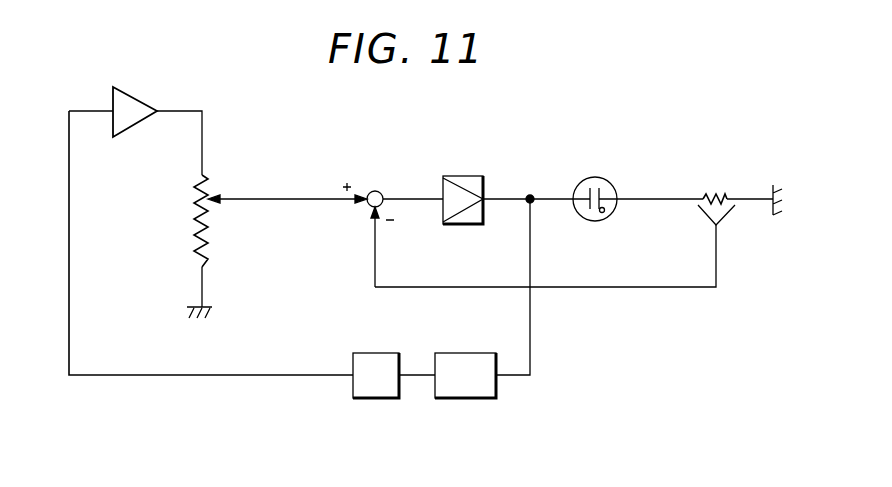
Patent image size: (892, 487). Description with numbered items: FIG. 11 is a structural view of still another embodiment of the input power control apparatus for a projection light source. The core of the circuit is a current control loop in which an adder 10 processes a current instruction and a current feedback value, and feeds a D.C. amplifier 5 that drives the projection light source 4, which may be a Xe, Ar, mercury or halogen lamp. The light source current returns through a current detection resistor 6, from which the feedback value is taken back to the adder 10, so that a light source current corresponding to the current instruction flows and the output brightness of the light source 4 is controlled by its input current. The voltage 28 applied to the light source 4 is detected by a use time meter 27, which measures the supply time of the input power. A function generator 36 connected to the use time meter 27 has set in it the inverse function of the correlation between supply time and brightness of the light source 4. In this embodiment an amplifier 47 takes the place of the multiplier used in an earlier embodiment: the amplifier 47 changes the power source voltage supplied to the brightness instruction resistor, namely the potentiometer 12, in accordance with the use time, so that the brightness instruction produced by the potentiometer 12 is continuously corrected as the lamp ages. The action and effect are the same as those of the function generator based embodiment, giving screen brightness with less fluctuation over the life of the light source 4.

The amplifier 47 is at (133, 93).
The potentiometer 12 is at (190, 211).
The adder 10 is at (377, 183).
The D.C. amplifier 5 is at (463, 176).
The voltage 28 is at (510, 197).
The projection light source 4 is at (603, 153).
The current detection resistor 6 is at (723, 175).
The function generator 36 is at (378, 399).
The use time meter 27 is at (468, 399).